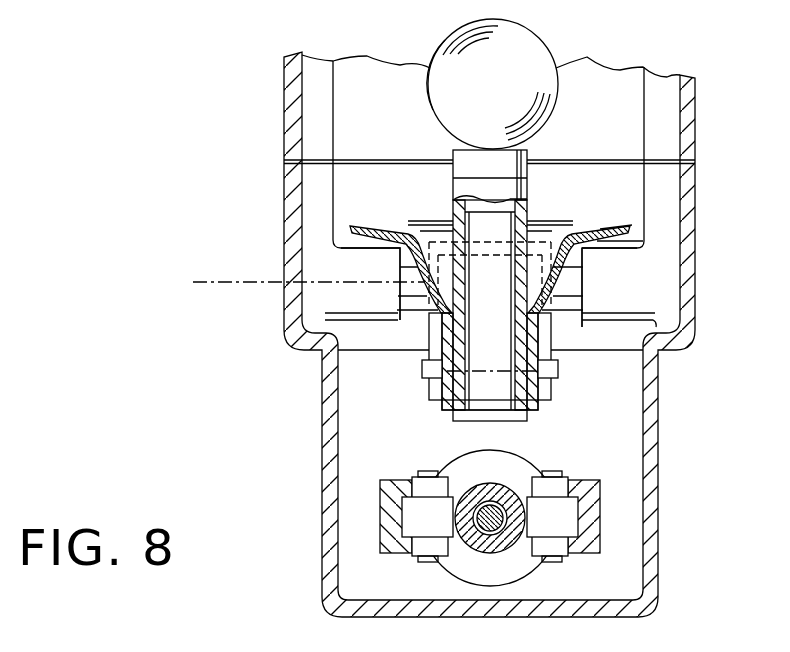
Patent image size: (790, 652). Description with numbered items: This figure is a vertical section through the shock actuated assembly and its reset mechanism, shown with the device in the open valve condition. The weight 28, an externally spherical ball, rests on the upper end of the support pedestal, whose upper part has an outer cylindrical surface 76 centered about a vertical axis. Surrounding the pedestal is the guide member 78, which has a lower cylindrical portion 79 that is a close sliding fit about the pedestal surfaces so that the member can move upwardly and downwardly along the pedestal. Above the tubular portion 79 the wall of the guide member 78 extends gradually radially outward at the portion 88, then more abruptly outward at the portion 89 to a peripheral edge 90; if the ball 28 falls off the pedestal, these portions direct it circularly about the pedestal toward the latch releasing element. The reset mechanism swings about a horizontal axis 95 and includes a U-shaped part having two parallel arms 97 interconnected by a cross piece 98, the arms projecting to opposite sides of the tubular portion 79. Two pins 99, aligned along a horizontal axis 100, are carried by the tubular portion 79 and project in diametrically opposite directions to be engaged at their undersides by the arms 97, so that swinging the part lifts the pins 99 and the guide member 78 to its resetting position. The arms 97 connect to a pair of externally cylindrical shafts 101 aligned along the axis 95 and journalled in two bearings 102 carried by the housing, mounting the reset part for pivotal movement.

The weight 28 is at (492, 84).
The outer cylindrical surface 76 is at (428, 163).
The guide member 78 is at (556, 208).
The cross piece 98 is at (492, 243).
The gradually outwardly extending wall portion 88 is at (572, 260).
The peripheral edge 90 is at (632, 226).
The abruptly outwardly extending wall portion 89 is at (598, 241).
The bearings 102 is at (370, 253).
The shafts 101 is at (398, 297).
The horizontal axis 95 is at (238, 282).
The horizontal axis 100 is at (491, 370).
The arms 97 is at (429, 332).
The pins 99 is at (422, 372).
The lower cylindrical portion 79 is at (446, 404).